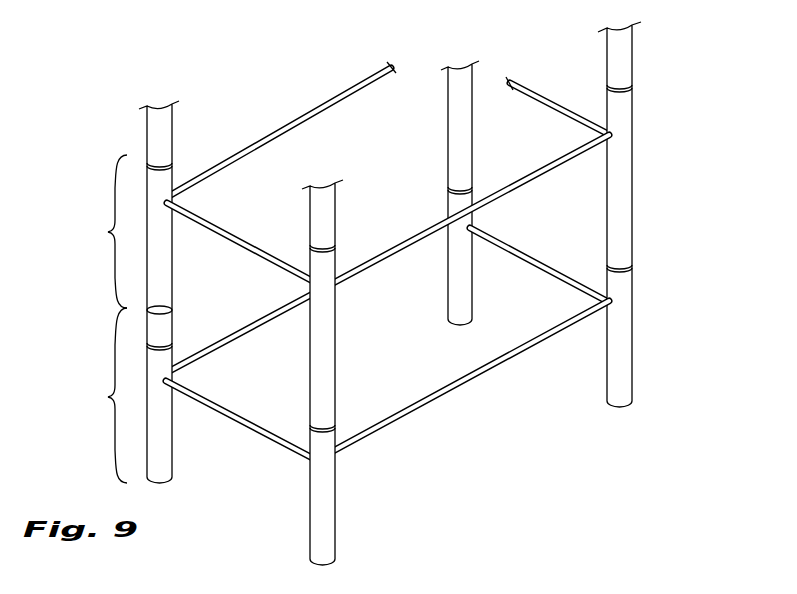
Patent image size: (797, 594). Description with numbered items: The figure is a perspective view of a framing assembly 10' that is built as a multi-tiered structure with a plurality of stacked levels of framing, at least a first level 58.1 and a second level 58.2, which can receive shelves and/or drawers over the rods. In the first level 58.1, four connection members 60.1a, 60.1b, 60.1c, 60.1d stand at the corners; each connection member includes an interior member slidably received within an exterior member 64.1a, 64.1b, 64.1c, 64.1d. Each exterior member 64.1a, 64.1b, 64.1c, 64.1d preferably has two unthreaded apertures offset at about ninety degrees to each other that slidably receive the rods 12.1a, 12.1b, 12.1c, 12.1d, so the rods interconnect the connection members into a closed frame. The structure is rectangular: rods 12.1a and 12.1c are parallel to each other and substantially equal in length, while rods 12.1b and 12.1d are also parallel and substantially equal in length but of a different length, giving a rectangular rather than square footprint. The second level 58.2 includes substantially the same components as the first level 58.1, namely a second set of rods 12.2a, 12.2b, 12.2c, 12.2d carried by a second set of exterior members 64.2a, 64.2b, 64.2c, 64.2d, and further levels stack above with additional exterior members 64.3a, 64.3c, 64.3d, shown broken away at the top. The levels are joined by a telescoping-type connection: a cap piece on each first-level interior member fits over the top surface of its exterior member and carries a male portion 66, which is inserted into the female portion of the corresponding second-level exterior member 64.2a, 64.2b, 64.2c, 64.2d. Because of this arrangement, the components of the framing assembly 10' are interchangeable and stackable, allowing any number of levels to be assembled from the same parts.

The framing assembly 10' is at (747, 145).
The rod 12.1a is at (240, 431).
The rod 12.1b is at (238, 339).
The rod 12.1c is at (542, 264).
The rod 12.1d is at (468, 388).
The rod 12.2a is at (223, 227).
The rod 12.2b is at (307, 121).
The rod 12.2c is at (538, 100).
The rod 12.2d is at (413, 232).
The first level 58.1 is at (88, 395).
The second level 58.2 is at (87, 231).
The connection member 60.1a is at (178, 342).
The connection member 60.1b is at (427, 262).
The connection member 60.1c is at (652, 292).
The connection member 60.1d is at (353, 468).
The exterior member 64.1a is at (178, 452).
The exterior member 64.1b is at (447, 300).
The exterior member 64.1c is at (633, 336).
The exterior member 64.1d is at (339, 520).
The exterior member 64.2a is at (174, 229).
The exterior member 64.2b is at (446, 130).
The exterior member 64.2c is at (633, 215).
The exterior member 64.2d is at (337, 375).
The exterior member 64.3a is at (147, 128).
The exterior member 64.3c is at (633, 72).
The exterior member 64.3d is at (364, 220).
The male portion 66 is at (159, 325).